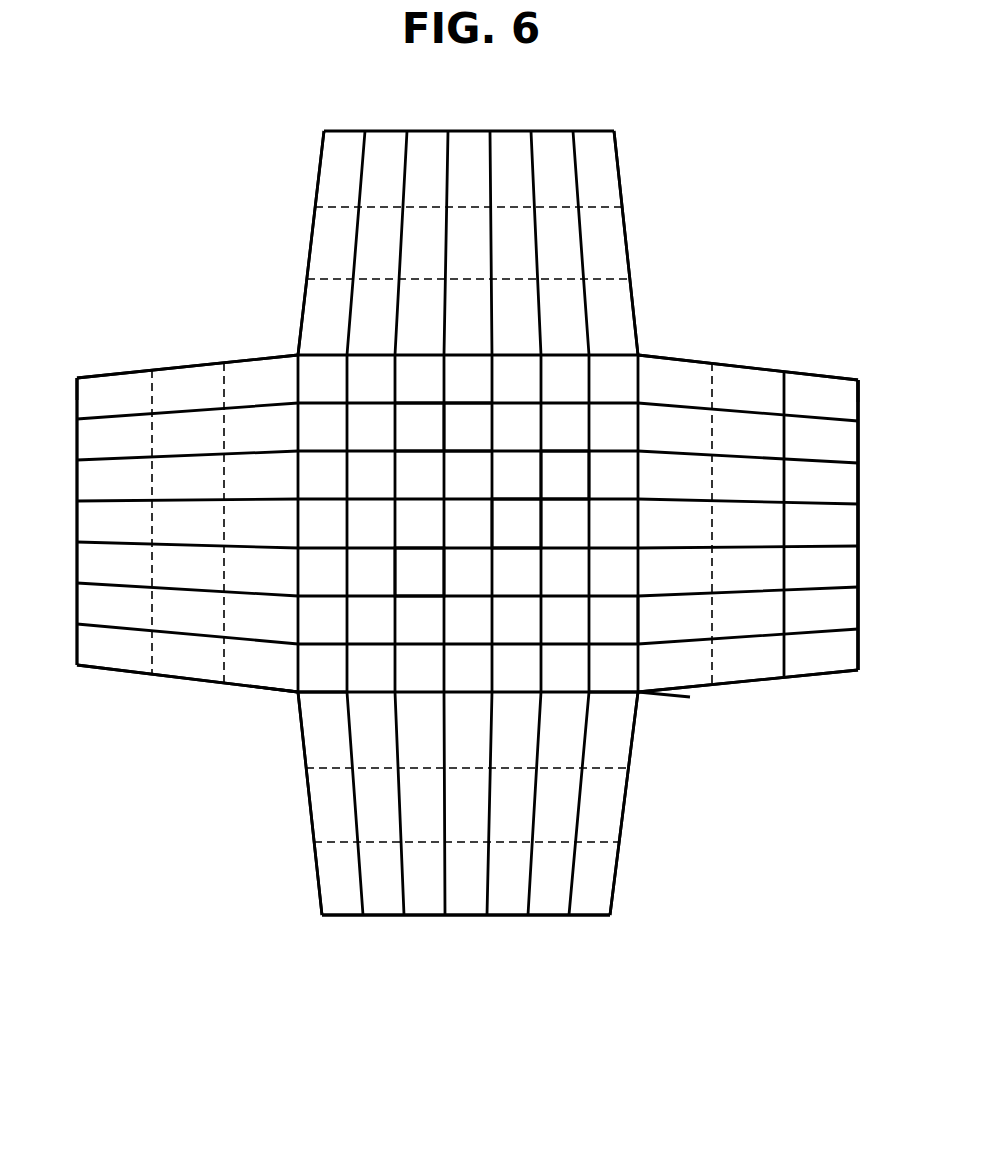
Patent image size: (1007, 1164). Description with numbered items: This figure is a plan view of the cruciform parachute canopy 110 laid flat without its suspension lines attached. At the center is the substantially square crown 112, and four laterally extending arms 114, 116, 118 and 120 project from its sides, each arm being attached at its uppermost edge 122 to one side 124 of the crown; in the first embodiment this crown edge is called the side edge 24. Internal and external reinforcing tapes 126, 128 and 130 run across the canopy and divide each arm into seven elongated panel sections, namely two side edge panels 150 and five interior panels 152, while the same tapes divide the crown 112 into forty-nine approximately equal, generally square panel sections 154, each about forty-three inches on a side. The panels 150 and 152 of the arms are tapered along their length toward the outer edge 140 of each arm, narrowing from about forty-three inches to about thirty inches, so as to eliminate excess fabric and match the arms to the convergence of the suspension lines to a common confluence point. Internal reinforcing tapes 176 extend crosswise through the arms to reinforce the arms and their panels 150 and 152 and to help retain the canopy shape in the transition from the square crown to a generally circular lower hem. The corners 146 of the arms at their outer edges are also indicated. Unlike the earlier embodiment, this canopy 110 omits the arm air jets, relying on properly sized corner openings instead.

The canopy 110 is at (186, 206).
The crown 112 is at (365, 482).
The arm 114 is at (740, 662).
The arm 116 is at (90, 600).
The arm 118 is at (467, 148).
The arm 120 is at (467, 898).
The uppermost edge 122 is at (613, 697).
The side 124 is at (318, 692).
The reinforcing tape 126 is at (310, 233).
The reinforcing tape 128 is at (177, 365).
The internal reinforcing tape 130 is at (490, 466).
The outer edge 140 is at (75, 518).
The corner 146 is at (50, 370).
The side edge panel 150 is at (807, 388).
The interior panel 152 is at (842, 449).
The panel section 154 is at (437, 585).
The internal reinforcing tape 176 is at (335, 280).
The side edge 24 is at (640, 622).